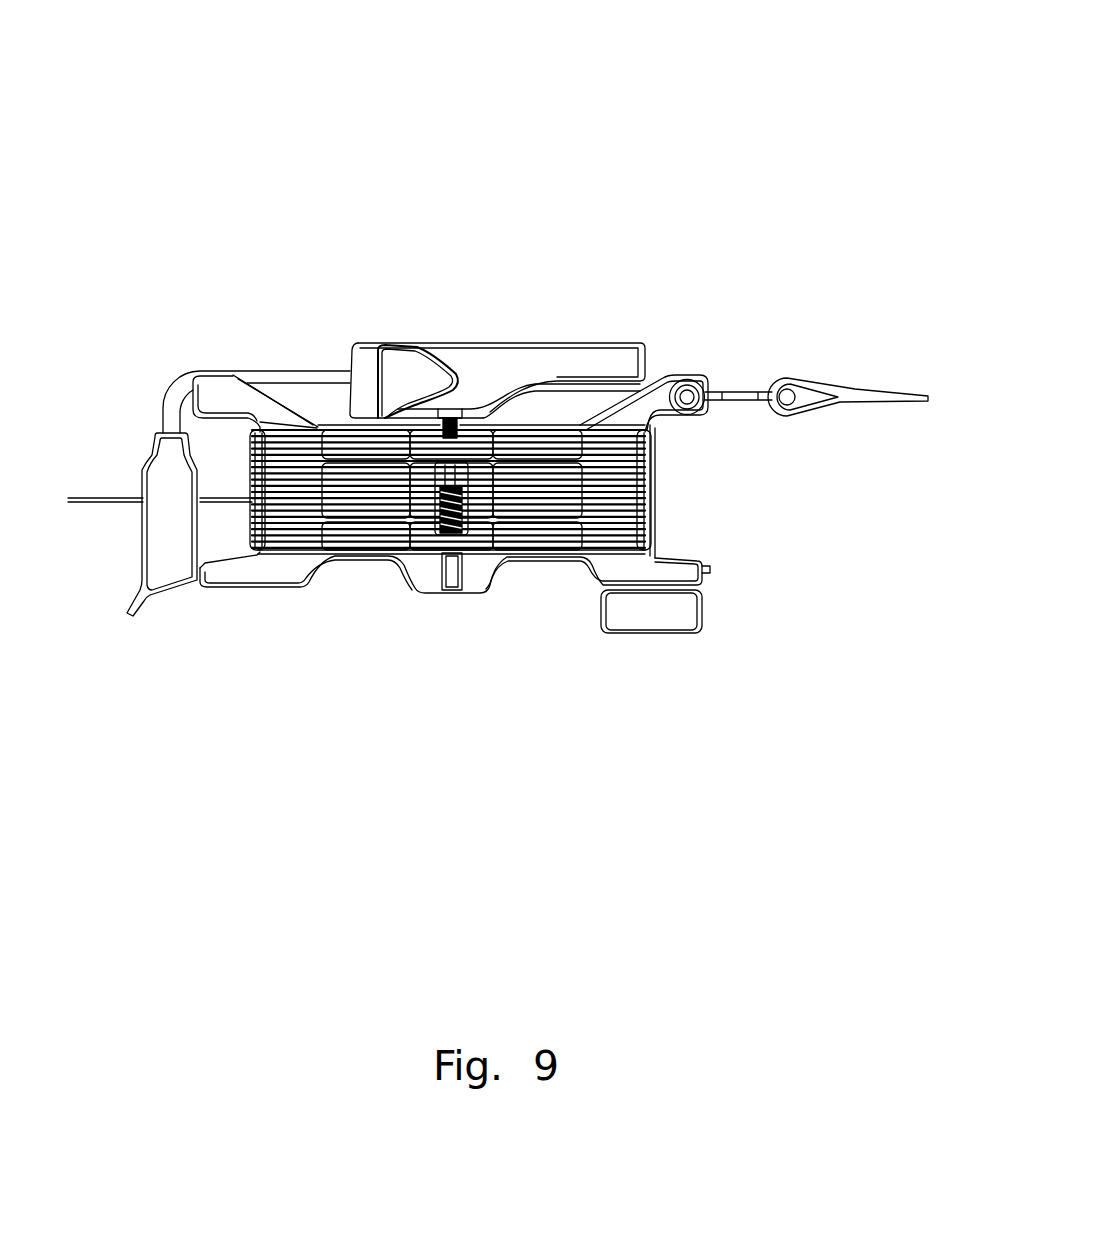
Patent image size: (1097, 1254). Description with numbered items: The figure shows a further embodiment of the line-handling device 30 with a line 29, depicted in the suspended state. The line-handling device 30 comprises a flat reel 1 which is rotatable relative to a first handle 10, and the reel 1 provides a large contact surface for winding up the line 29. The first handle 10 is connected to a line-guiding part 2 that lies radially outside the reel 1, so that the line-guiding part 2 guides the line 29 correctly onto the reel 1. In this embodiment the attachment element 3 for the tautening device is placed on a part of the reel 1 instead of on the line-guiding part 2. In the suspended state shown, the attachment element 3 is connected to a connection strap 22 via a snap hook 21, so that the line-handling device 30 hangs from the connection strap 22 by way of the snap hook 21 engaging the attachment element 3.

The line-handling device 30 is at (613, 162).
The reel 1 is at (478, 593).
The first handle 10 is at (470, 343).
The attachment element 3 is at (686, 392).
The snap hook 21 is at (732, 402).
The connection strap 22 is at (787, 380).
The line 29 is at (120, 497).
The line-guiding part 2 is at (143, 530).